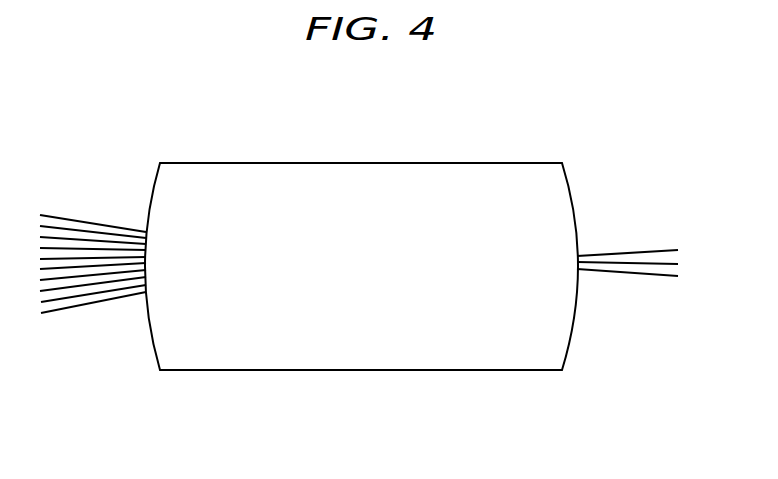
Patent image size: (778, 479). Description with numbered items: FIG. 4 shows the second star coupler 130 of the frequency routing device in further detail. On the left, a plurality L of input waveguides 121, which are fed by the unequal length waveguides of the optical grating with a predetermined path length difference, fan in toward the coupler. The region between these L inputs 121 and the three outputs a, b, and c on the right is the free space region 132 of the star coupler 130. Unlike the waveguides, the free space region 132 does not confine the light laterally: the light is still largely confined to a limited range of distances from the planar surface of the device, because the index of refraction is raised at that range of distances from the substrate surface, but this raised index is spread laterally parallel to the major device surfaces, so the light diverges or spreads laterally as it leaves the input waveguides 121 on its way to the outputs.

The second star coupler 130 is at (385, 81).
The free space region 132 is at (362, 163).
The input waveguides 121 is at (58, 214).